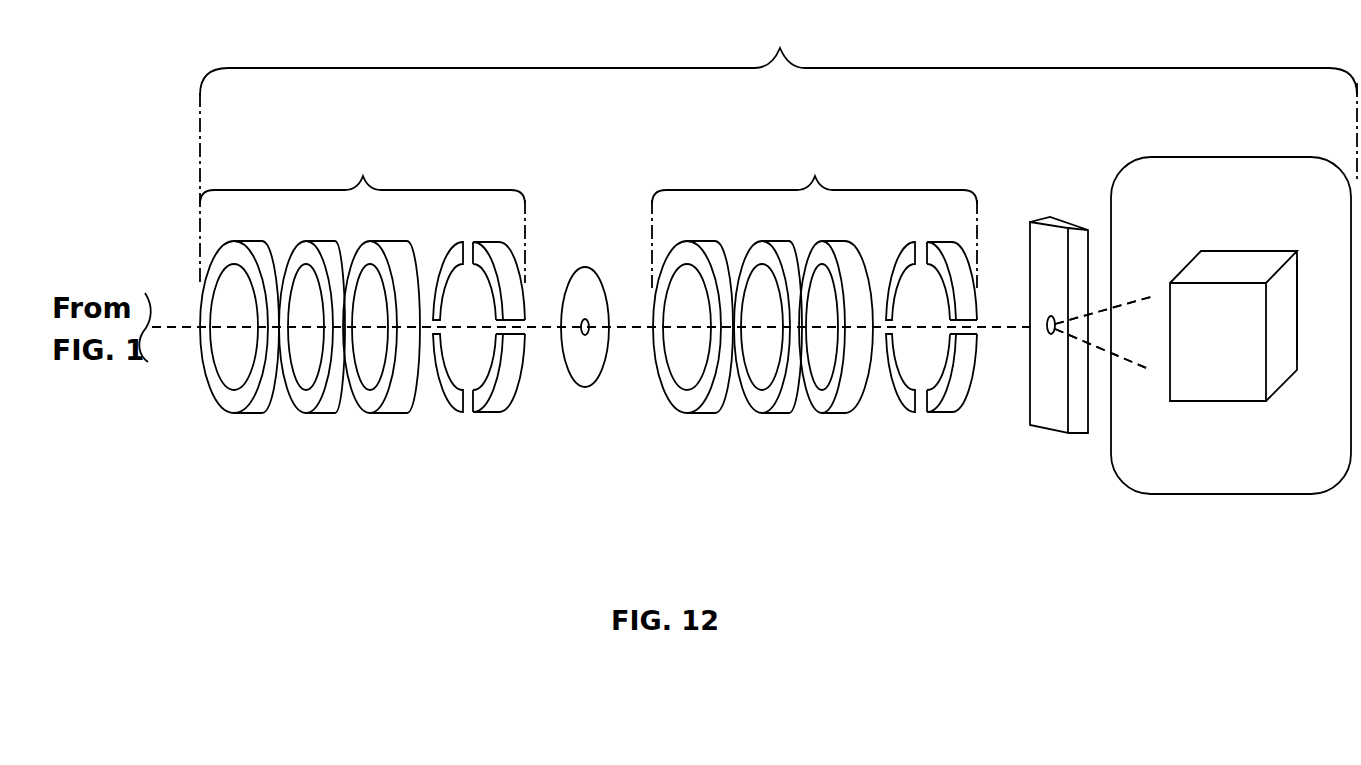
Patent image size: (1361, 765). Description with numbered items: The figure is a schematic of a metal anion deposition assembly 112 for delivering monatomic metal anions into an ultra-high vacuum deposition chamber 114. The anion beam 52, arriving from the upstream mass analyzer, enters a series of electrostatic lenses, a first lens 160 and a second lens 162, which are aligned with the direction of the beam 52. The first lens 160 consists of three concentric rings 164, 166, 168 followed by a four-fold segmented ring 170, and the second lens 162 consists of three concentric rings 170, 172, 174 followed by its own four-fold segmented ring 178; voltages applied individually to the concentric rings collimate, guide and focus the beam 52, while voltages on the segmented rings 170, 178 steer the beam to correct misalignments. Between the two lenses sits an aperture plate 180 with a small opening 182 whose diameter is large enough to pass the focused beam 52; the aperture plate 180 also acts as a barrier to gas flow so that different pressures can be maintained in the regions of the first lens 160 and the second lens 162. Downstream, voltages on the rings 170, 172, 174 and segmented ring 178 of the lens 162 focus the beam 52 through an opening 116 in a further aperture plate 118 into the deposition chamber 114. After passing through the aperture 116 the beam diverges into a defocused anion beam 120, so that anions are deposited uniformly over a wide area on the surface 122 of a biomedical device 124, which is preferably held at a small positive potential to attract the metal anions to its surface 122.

The anion beam 52 is at (169, 330).
The metal anion deposition assembly 112 is at (778, 151).
The deposition chamber 114 is at (1268, 526).
The opening 116 is at (1050, 335).
The aperture plate 118 is at (1052, 218).
The defocused anion beam 120 is at (1124, 318).
The surface 122 is at (1185, 363).
The biomedical device 124 is at (1298, 310).
The first electrostatic lens 160 is at (362, 215).
The second electrostatic lens 162 is at (814, 217).
The concentric ring 164 is at (250, 414).
The concentric ring 166 is at (317, 414).
The concentric ring 168 is at (374, 414).
The concentric ring 170 is at (481, 414).
The concentric ring 172 is at (770, 414).
The concentric ring 174 is at (827, 414).
The four-fold segmented ring 178 is at (938, 412).
The aperture plate 180 is at (575, 386).
The opening 182 is at (582, 320).